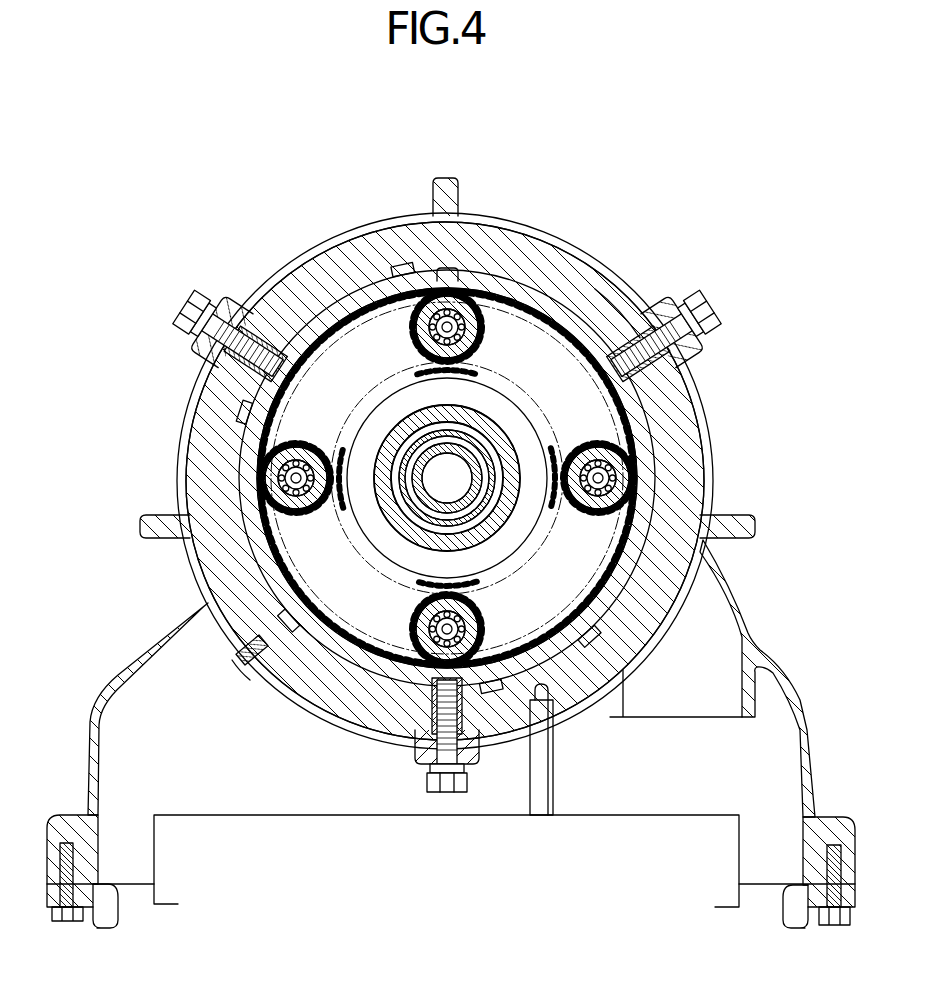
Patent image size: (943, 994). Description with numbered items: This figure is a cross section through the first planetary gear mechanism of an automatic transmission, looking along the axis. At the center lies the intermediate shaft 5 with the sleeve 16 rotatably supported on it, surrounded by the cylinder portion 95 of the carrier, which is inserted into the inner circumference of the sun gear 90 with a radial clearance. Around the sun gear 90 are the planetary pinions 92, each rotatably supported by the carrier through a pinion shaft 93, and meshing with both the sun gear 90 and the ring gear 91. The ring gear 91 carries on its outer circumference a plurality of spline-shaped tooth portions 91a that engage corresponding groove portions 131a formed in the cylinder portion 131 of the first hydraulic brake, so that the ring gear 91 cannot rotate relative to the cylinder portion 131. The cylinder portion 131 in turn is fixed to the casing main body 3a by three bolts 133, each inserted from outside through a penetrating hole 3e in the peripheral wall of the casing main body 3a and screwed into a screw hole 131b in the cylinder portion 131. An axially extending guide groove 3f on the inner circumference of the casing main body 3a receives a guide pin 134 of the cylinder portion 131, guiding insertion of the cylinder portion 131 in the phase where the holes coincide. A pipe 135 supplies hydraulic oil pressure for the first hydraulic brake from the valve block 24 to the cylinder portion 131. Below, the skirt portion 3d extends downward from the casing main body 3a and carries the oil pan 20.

The casing main body 3a is at (520, 222).
The skirt portion 3d is at (88, 730).
The penetrating holes 3e is at (216, 300).
The guide groove 3f is at (250, 665).
The intermediate shaft 5 is at (402, 510).
The sleeve 16 is at (469, 451).
The oil pan 20 is at (78, 918).
The valve block 24 is at (205, 815).
The sun gear 90 is at (541, 418).
The ring gear 91 is at (560, 300).
The tooth portions 91a is at (348, 338).
The planetary pinions 92 is at (482, 333).
The pinion shaft 93 is at (425, 334).
The cylinder portion 95 is at (392, 438).
The cylinder portion 131 is at (620, 290).
The groove portions 131a is at (385, 290).
The screw holes 131b is at (270, 340).
The bolt 133 is at (190, 310).
The guide pin 134 is at (262, 682).
The pipe 135 is at (555, 782).